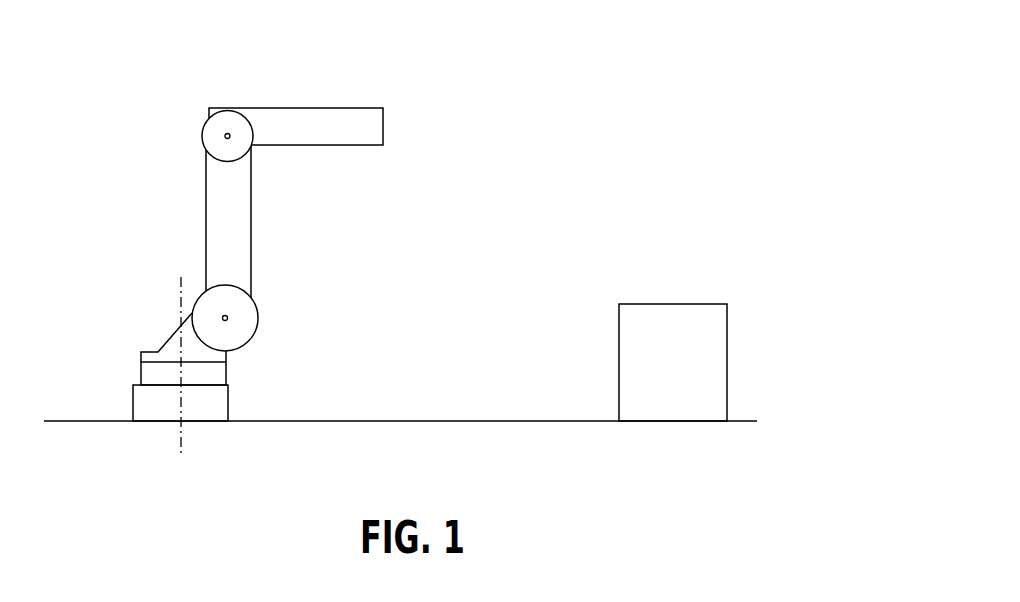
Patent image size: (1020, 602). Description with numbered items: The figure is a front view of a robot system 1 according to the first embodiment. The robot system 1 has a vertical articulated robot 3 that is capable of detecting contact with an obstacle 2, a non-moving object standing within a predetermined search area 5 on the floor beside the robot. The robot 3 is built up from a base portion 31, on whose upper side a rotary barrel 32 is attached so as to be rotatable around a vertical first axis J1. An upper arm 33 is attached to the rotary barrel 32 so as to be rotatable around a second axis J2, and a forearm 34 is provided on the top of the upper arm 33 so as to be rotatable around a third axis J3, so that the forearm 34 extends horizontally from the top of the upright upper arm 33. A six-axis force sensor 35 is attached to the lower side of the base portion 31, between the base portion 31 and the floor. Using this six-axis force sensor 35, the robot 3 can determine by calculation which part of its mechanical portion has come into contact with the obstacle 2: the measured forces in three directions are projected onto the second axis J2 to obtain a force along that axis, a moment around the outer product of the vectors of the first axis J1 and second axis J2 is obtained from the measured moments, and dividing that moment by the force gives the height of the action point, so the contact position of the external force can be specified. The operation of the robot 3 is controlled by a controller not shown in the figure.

The robot system 1 is at (418, 110).
The obstacle 2 is at (667, 304).
The vertical articulated robot 3 is at (118, 180).
The search area 5 is at (478, 378).
The base portion 31 is at (147, 375).
The rotary barrel 32 is at (163, 342).
The upper arm 33 is at (203, 217).
The forearm 34 is at (327, 108).
The 6-axis force sensor 35 is at (218, 404).
The first axis J1 is at (179, 383).
The second axis J2 is at (227, 318).
The third axis J3 is at (225, 137).